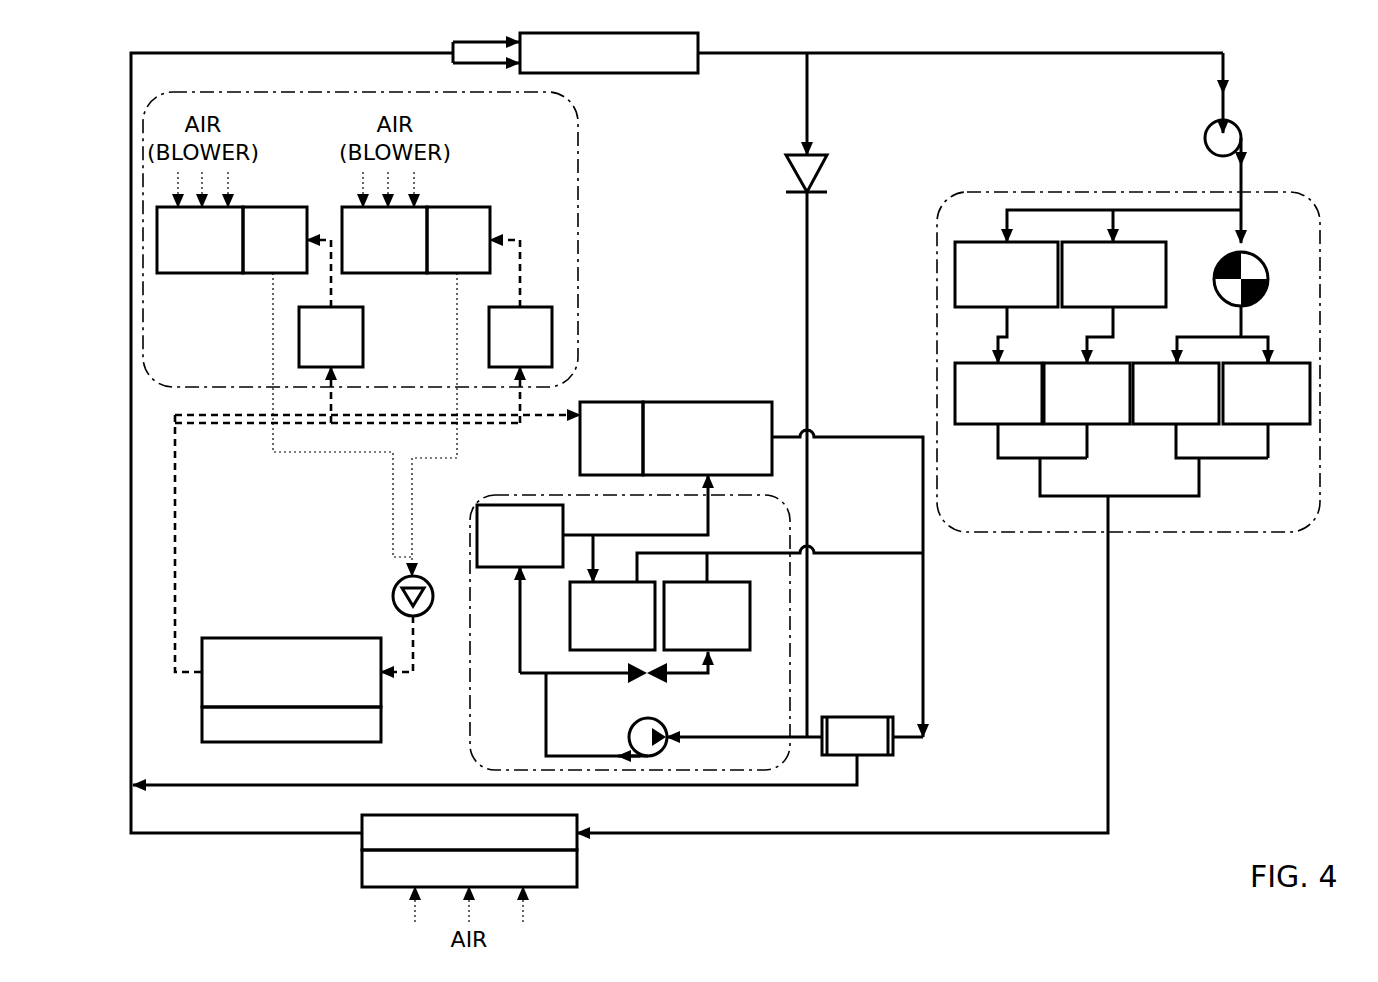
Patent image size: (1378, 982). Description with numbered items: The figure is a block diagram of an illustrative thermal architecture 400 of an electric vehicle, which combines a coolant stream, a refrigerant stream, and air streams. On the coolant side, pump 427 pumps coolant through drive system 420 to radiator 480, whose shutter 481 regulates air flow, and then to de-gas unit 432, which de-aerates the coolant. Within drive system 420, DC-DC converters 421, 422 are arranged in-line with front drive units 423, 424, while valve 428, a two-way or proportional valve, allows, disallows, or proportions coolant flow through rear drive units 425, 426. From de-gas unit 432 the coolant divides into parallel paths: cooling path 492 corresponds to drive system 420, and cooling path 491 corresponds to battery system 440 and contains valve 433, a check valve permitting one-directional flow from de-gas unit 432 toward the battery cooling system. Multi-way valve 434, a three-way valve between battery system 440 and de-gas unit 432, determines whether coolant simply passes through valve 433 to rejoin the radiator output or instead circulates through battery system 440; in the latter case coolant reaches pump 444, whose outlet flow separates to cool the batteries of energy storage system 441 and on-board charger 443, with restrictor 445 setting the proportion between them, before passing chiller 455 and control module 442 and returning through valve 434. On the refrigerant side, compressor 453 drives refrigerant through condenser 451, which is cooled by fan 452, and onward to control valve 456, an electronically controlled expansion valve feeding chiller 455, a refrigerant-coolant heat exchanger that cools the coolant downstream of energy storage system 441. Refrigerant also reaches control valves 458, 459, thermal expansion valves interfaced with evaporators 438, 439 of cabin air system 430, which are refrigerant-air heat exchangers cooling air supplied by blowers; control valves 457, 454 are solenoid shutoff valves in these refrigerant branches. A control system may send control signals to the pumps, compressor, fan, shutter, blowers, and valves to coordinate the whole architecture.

The thermal architecture 400 is at (712, 437).
The de-gas unit 432 is at (609, 53).
The cooling path 491 is at (815, 75).
The valve 433 is at (830, 158).
The cooling path 492 is at (1228, 68).
The pump 427 is at (1245, 128).
The drive system 420 is at (1128, 362).
The valve 428 is at (1216, 262).
The DC-DC converter 421 is at (1006, 302).
The DC-DC converter 422 is at (1114, 302).
The front drive unit 423 is at (1021, 410).
The front drive unit 424 is at (1087, 410).
The rear drive unit 425 is at (1200, 410).
The rear drive unit 426 is at (1266, 410).
The cabin air system 430 is at (360, 239).
The evaporator 438 is at (200, 240).
The control valve 458 is at (275, 240).
The evaporator 439 is at (384, 240).
The control valve 459 is at (458, 240).
The control valve 457 is at (331, 331).
The control valve 454 is at (520, 331).
The compressor 453 is at (392, 596).
The condenser 451 is at (291, 672).
The fan 452 is at (291, 724).
The control valve 456 is at (611, 438).
The chiller 455 is at (783, 569).
The battery system 440 is at (630, 632).
The energy storage system 441 is at (592, 574).
The control module 442 is at (746, 598).
The on-board charger 443 is at (707, 613).
The restrictor 445 is at (665, 680).
The pump 444 is at (630, 748).
The multi-way valve 434 is at (895, 757).
The radiator 480 is at (469, 832).
The shutter 481 is at (469, 868).